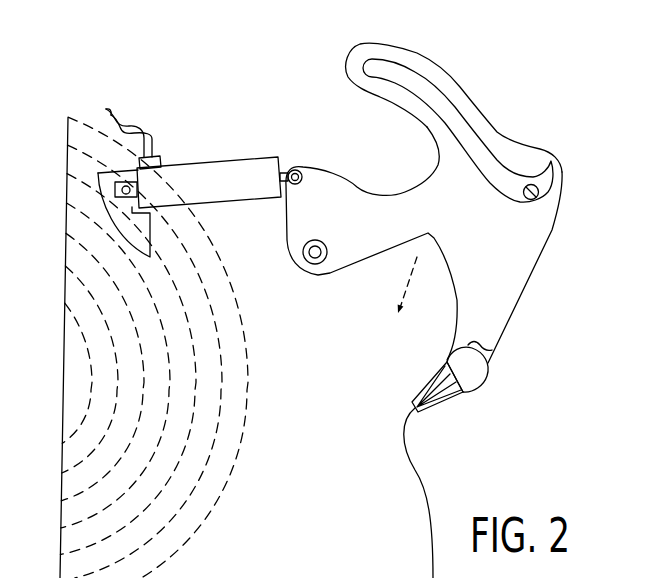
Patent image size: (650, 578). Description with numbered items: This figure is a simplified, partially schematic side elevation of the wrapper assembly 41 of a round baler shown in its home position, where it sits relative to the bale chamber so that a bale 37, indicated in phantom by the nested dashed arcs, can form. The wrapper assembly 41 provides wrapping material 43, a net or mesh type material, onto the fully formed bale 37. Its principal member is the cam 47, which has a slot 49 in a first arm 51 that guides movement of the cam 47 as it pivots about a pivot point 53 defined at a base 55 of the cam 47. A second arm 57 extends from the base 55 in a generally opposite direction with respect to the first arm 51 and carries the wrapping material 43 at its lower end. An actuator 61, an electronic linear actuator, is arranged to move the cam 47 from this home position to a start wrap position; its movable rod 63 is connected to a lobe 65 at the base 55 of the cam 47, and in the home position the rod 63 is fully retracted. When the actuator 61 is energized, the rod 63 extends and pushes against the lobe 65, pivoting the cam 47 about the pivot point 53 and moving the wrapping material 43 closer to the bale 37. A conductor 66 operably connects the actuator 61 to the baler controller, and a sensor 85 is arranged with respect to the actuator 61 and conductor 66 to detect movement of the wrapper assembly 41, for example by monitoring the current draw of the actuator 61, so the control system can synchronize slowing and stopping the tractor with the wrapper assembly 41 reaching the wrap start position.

The bale 37 is at (246, 391).
The wrapper assembly 41 is at (560, 89).
The wrapping material 43 is at (471, 374).
The cam 47 is at (564, 157).
The slot 49 is at (408, 84).
The first arm 51 is at (490, 124).
The pivot point 53 is at (309, 262).
The base 55 is at (345, 206).
The second arm 57 is at (507, 299).
The actuator 61 is at (202, 158).
The rod 63 is at (288, 168).
The lobe 65 is at (320, 178).
The conductor 66 is at (108, 118).
The sensor 85 is at (159, 158).